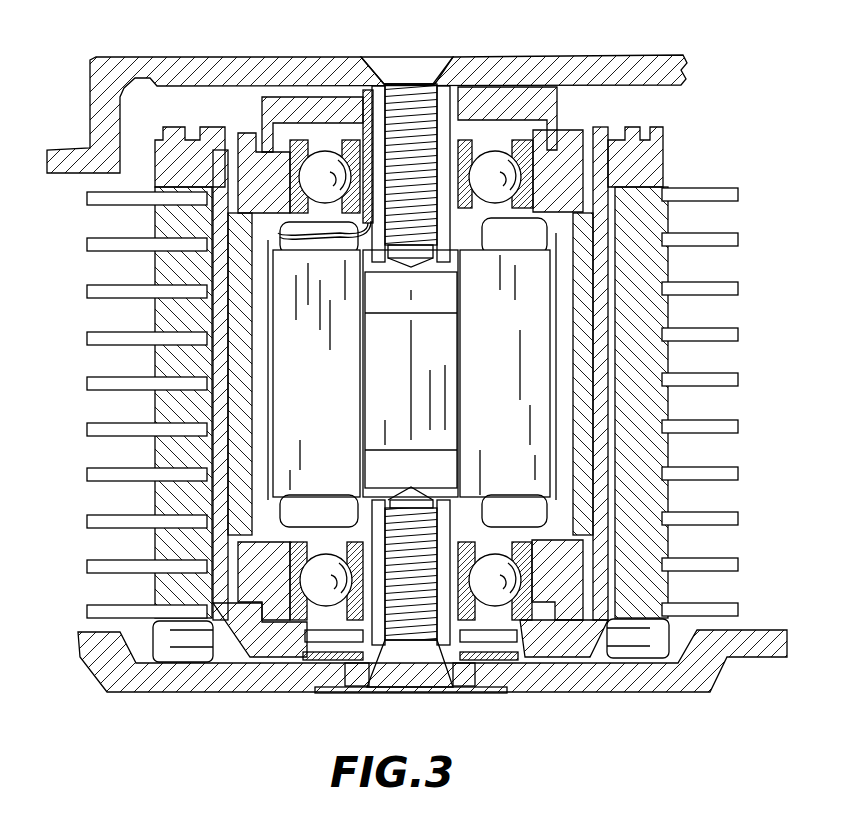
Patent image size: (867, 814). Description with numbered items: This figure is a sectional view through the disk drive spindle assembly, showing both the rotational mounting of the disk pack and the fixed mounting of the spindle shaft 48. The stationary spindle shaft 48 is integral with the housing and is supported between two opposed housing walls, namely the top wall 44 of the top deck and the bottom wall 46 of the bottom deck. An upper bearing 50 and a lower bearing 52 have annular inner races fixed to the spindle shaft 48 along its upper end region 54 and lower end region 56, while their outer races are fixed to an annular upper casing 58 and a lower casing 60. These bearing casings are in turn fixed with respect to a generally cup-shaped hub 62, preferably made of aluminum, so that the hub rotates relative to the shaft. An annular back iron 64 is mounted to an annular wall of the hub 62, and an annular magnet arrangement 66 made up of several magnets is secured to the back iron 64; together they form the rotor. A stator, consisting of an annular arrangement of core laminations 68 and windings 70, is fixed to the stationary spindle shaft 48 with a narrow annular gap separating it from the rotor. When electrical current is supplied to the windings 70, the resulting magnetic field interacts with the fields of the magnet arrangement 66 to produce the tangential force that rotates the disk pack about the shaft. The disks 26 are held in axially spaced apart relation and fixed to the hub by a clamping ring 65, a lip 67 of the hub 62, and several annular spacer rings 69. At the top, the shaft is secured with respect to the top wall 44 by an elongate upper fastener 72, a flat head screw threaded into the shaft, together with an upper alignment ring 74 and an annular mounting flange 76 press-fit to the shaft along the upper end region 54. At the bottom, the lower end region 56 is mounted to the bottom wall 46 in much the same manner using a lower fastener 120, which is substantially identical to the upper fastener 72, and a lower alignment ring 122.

The disks 26 is at (720, 185).
The top wall 44 is at (212, 58).
The bottom wall 46 is at (243, 682).
The spindle shaft 48 is at (437, 342).
The upper bearing 50 is at (490, 158).
The lower bearing 52 is at (498, 595).
The upper end region 54 is at (448, 108).
The lower end region 56 is at (372, 645).
The upper casing 58 is at (638, 163).
The lower casing 60 is at (572, 592).
The hub 62 is at (221, 272).
The back iron 64 is at (240, 362).
The clamping ring 65 is at (183, 638).
The magnet arrangement 66 is at (262, 312).
The lip 67 is at (188, 155).
The core laminations 68 is at (333, 395).
The spacer rings 69 is at (167, 493).
The windings 70 is at (500, 508).
The upper fastener 72 is at (412, 63).
The upper alignment ring 74 is at (341, 63).
The mounting flange 76 is at (566, 55).
The lower fastener 120 is at (415, 673).
The lower alignment ring 122 is at (455, 650).